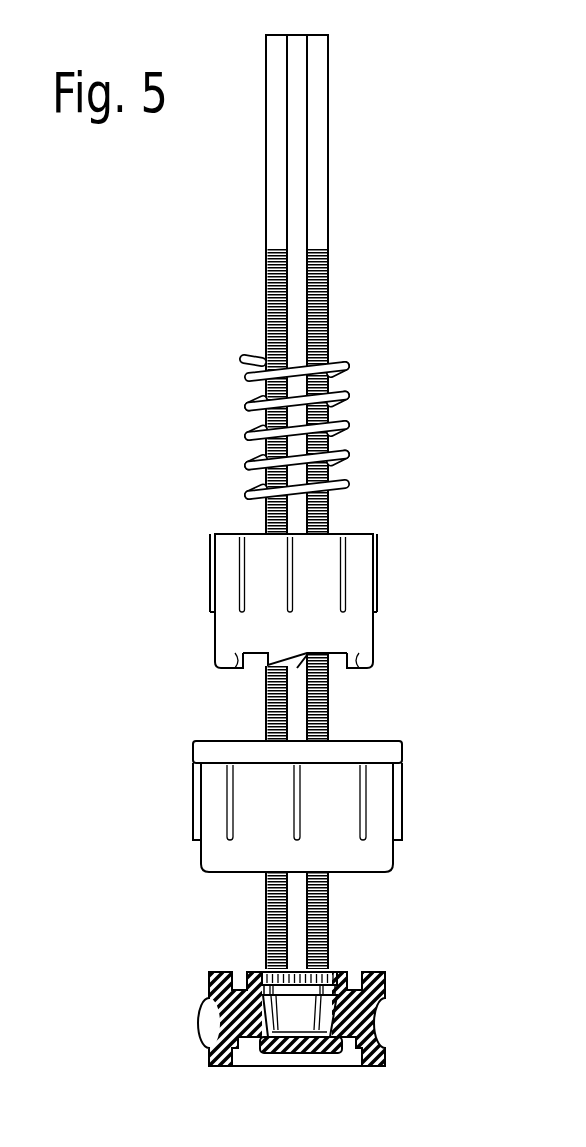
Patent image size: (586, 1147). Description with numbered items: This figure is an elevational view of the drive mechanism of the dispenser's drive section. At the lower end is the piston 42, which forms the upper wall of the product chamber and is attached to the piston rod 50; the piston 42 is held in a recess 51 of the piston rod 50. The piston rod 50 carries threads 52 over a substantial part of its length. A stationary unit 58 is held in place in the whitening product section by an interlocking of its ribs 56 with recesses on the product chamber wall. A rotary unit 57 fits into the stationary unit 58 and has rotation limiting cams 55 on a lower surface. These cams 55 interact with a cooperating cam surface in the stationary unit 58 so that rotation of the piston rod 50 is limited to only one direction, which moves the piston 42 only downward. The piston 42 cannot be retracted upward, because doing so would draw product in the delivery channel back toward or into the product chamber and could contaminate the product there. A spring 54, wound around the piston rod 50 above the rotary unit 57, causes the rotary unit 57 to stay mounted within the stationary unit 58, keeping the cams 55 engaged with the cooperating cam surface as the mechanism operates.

The piston rod 50 is at (328, 228).
The threads 52 is at (330, 700).
The spring 54 is at (350, 358).
The rotation limiting cams 55 is at (460, 645).
The ribs 56 is at (377, 583).
The rotary unit 57 is at (215, 630).
The stationary unit 58 is at (393, 855).
The recess 51 is at (385, 990).
The piston 42 is at (385, 1050).